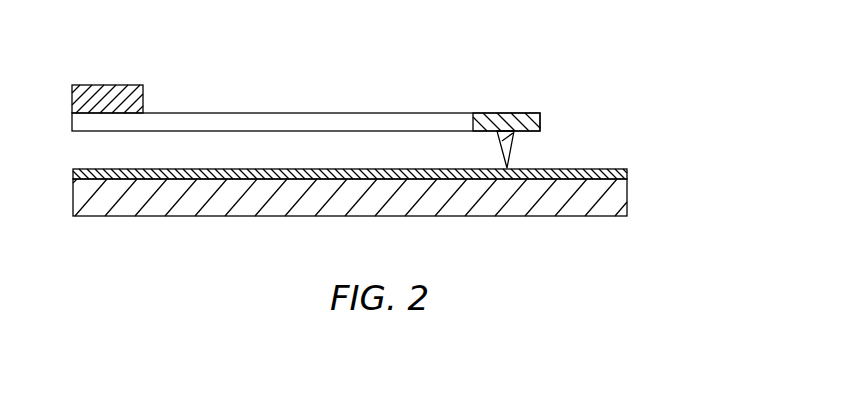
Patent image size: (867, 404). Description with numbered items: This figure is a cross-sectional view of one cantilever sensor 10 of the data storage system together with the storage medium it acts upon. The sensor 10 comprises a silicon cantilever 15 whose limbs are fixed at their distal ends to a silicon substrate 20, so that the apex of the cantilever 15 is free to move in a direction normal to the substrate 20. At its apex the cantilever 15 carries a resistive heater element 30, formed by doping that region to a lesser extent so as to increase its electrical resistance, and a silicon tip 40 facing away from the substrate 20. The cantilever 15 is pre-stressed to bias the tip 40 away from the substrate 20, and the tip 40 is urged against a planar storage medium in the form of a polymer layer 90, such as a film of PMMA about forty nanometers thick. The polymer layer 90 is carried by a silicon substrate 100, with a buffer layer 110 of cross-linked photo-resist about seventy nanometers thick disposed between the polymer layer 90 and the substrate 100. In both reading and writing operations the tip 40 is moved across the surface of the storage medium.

The cantilever sensor 10 is at (352, 86).
The cantilever 15 is at (203, 113).
The substrate 20 is at (97, 84).
The resistive heater element 30 is at (485, 113).
The silicon tip 40 is at (514, 152).
The polymer layer 90 is at (628, 170).
The silicon substrate 100 is at (628, 198).
The buffer layer 110 is at (628, 178).